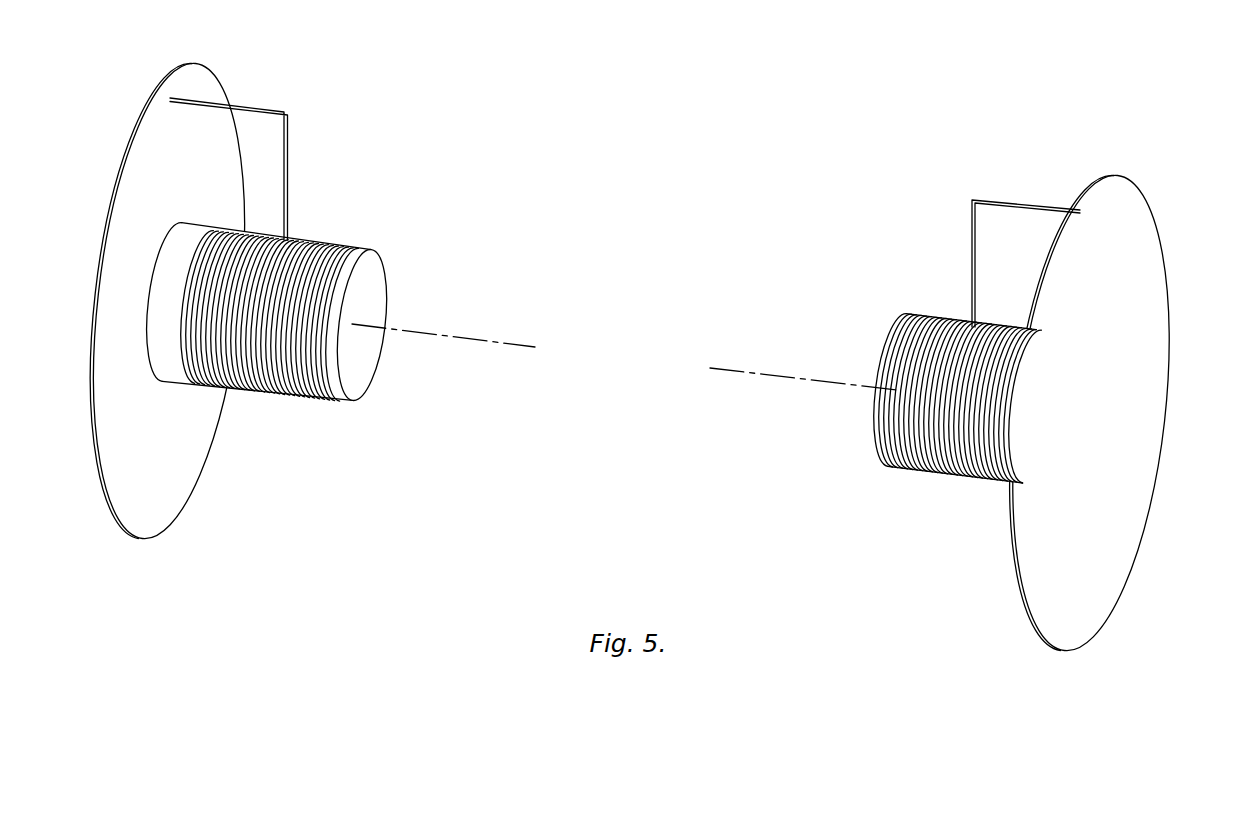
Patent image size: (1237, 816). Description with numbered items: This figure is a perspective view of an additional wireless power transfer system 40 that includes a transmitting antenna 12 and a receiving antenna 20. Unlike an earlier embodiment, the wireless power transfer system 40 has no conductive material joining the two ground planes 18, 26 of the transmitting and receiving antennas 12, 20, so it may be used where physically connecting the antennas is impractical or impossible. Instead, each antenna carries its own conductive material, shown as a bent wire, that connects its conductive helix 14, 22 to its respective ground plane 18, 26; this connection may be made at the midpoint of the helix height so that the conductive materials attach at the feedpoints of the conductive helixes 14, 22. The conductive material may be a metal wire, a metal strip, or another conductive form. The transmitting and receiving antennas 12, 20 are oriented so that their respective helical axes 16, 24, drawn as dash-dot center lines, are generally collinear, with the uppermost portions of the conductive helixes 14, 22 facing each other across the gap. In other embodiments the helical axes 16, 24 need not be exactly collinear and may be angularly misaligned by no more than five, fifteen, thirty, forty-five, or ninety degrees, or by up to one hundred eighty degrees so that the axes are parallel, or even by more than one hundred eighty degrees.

The transmitting antenna 12 is at (167, 560).
The conductive helix 14 is at (293, 395).
The helical axis 16 is at (443, 333).
The ground plane 18 is at (145, 157).
The receiving antenna 20 is at (1103, 658).
The conductive helix 22 is at (937, 477).
The helical axis 24 is at (760, 375).
The ground plane 26 is at (1115, 525).
The wireless power transfer system 40 is at (783, 120).